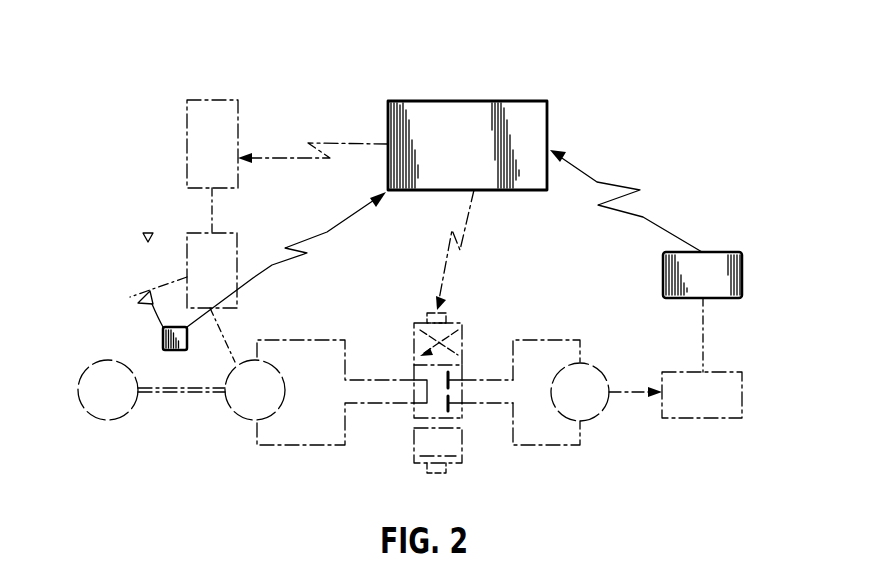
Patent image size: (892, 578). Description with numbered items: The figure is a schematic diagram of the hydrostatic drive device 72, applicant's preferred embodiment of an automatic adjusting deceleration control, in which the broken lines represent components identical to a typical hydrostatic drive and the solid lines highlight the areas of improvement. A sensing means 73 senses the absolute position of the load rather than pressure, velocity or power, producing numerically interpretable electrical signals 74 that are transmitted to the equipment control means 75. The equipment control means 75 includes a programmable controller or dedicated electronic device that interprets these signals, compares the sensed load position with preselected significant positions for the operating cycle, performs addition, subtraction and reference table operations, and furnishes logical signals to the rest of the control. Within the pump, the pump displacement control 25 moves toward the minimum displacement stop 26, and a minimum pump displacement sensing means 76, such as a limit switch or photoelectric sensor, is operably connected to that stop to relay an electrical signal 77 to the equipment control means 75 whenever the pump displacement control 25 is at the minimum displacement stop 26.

The hydrostatic drive device 72 is at (174, 92).
The pump displacement control 25 is at (196, 237).
The minimum displacement stop 26 is at (138, 303).
The minimum pump displacement sensing means 76 is at (163, 338).
The electrical signal 77 is at (327, 232).
The equipment control means 75 is at (498, 103).
The signals 74 is at (675, 236).
The sensing means 73 is at (729, 275).